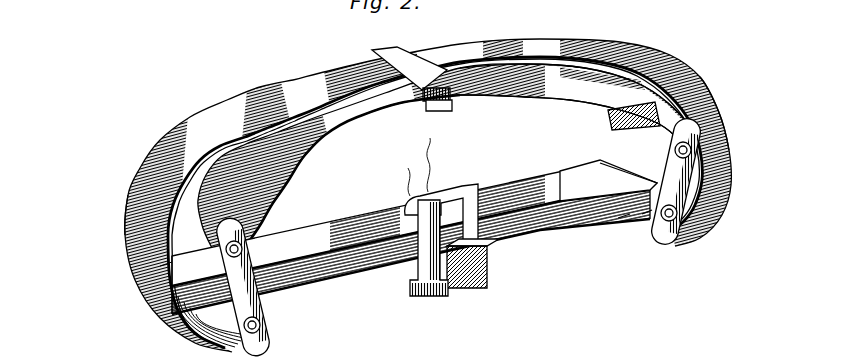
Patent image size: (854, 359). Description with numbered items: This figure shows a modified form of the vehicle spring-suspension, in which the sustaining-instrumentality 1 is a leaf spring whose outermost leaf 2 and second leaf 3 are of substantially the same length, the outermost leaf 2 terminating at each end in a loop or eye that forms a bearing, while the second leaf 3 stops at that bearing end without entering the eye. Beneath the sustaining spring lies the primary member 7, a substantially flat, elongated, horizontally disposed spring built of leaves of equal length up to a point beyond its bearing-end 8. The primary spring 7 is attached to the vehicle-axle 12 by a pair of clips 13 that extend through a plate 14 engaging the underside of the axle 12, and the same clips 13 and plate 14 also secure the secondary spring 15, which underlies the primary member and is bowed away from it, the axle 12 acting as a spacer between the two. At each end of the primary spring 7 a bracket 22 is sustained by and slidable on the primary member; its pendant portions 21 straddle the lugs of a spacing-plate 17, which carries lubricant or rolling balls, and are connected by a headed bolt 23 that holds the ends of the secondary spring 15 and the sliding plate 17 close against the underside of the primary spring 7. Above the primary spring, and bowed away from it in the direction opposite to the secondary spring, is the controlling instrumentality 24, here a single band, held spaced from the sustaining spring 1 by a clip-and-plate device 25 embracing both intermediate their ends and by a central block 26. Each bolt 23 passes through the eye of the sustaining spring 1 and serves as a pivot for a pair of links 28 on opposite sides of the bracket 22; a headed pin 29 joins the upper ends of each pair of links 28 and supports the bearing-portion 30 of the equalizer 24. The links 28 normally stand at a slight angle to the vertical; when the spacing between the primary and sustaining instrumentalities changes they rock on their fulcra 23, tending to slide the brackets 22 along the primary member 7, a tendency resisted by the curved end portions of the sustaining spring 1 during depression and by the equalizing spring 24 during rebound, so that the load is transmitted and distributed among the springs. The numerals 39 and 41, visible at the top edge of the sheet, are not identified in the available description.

The sustaining-instrumentality 1 is at (210, 115).
The outermost leaf 2 is at (714, 207).
The second leaf 3 is at (705, 182).
The primary member 7 is at (513, 190).
The bearing-end 8 is at (576, 175).
The vehicle-axle 12 is at (478, 290).
The clips 13 is at (428, 192).
The plate 14 is at (418, 290).
The secondary spring 15 is at (372, 284).
The spacing-plate 17 is at (621, 219).
The pendant portions 21 is at (646, 218).
The bracket 22 is at (233, 343).
The bolt 23 is at (262, 321).
The controlling instrumentality 24 is at (584, 100).
The clip-and-plate device 25 is at (448, 101).
The block 26 is at (338, 104).
The links 28 is at (160, 268).
The headed pin 29 is at (241, 246).
The bearing-portion 30 is at (125, 232).
The part of adjacent figure 39 is at (126, 7).
The part of adjacent figure 41 is at (196, 9).